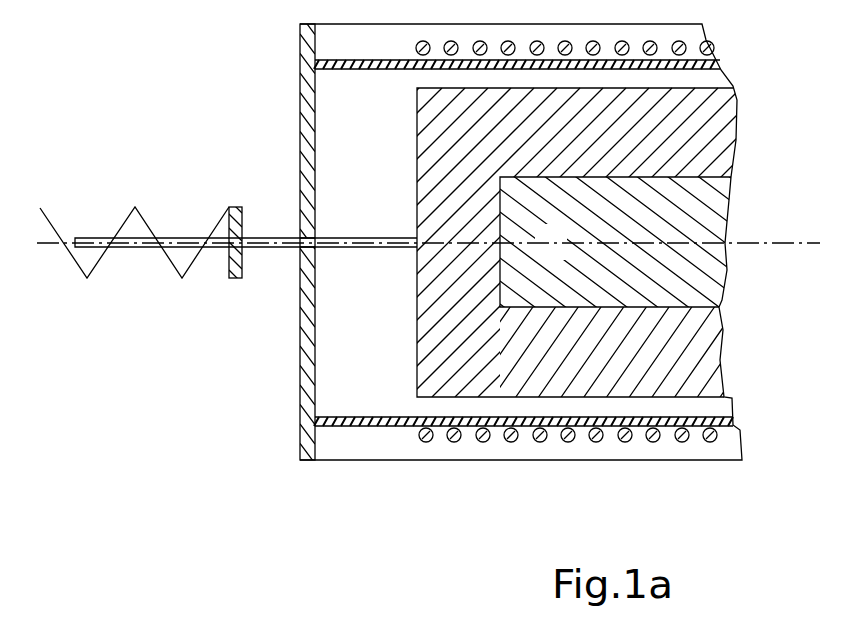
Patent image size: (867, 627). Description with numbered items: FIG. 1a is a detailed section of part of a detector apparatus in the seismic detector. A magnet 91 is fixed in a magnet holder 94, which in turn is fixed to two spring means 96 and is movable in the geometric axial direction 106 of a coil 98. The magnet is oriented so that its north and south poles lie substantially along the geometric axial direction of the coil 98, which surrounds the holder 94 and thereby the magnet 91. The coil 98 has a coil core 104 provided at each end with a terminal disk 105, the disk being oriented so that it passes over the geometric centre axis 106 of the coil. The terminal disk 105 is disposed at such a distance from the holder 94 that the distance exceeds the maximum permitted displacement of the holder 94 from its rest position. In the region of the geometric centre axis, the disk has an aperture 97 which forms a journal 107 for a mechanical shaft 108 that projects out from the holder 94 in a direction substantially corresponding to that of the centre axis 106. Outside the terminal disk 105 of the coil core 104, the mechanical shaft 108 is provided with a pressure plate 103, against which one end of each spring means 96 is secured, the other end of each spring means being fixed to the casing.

The permanent magnet 91 is at (690, 297).
The magnet holder 94 is at (563, 390).
The spring means 96 is at (182, 278).
The aperture 97 is at (298, 247).
The coil 98 is at (461, 442).
The pressure plate 103 is at (243, 225).
The coil core 104 is at (335, 447).
The terminal disk 105 is at (300, 365).
The geometric axial direction 106 is at (812, 242).
The journal 107 is at (317, 238).
The mechanical shaft 108 is at (353, 247).